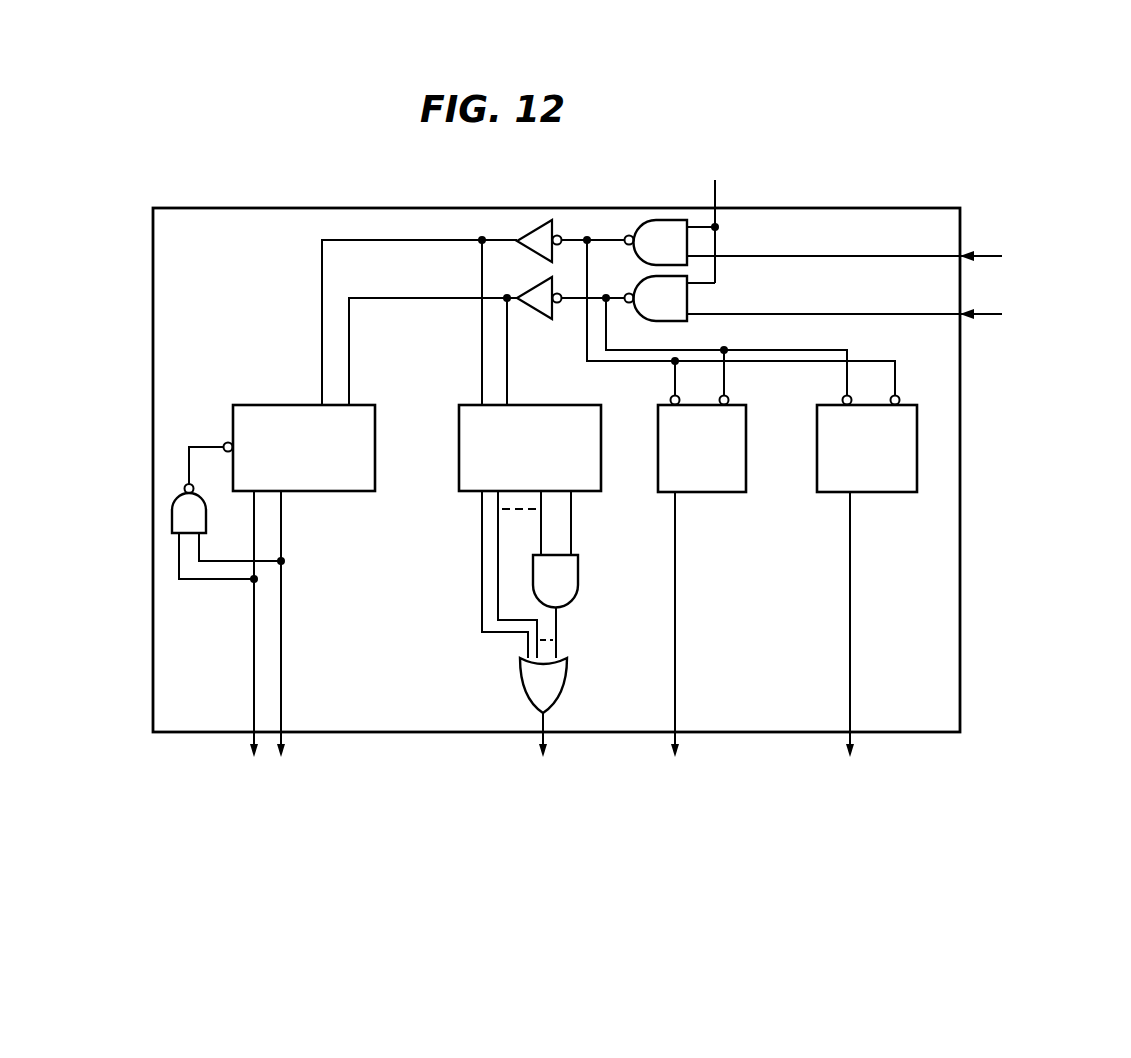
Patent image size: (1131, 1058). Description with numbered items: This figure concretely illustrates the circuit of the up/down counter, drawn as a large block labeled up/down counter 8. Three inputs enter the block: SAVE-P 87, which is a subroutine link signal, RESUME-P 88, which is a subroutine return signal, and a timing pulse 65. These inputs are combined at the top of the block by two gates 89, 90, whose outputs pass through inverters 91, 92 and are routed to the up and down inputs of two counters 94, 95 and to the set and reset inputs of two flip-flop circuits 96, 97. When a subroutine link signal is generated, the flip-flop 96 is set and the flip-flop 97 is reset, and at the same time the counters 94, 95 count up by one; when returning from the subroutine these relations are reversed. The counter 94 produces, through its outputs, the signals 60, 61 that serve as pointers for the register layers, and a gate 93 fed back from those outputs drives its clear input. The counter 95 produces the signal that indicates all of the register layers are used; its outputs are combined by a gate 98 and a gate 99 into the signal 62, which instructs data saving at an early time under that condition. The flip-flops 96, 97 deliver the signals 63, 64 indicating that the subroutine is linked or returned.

The up/down counter 8 is at (265, 208).
The pointer signal 60 is at (254, 742).
The pointer signal 61 is at (281, 742).
The all-register-layers-used signal 62 is at (544, 767).
The subroutine link signal 63 is at (736, 658).
The subroutine return signal 64 is at (857, 745).
The timing pulse 65 is at (722, 210).
The SAVE-P 87 is at (992, 254).
The RESUME-P 88 is at (992, 318).
The NAND gate 89 is at (648, 222).
The NAND gate 90 is at (690, 320).
The inverter 91 is at (538, 222).
The inverter 92 is at (540, 316).
The NAND gate 93 is at (172, 512).
The counter 94 is at (262, 404).
The counter 95 is at (459, 472).
The flip-flop circuit 96 is at (732, 492).
The flip-flop circuit 97 is at (903, 492).
The AND gate 98 is at (580, 575).
The OR gate 99 is at (568, 672).